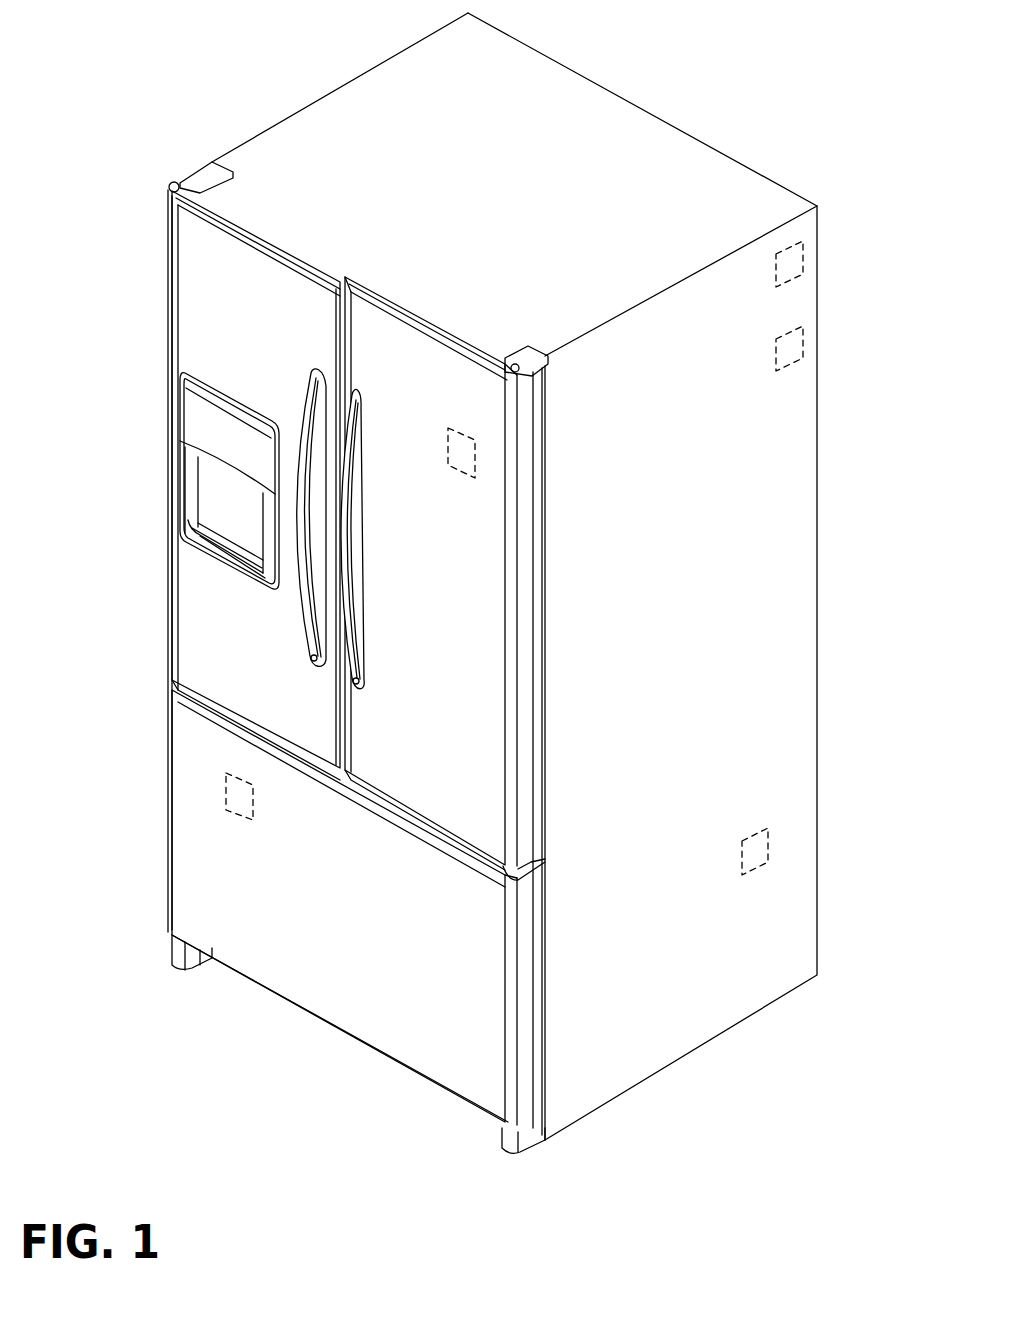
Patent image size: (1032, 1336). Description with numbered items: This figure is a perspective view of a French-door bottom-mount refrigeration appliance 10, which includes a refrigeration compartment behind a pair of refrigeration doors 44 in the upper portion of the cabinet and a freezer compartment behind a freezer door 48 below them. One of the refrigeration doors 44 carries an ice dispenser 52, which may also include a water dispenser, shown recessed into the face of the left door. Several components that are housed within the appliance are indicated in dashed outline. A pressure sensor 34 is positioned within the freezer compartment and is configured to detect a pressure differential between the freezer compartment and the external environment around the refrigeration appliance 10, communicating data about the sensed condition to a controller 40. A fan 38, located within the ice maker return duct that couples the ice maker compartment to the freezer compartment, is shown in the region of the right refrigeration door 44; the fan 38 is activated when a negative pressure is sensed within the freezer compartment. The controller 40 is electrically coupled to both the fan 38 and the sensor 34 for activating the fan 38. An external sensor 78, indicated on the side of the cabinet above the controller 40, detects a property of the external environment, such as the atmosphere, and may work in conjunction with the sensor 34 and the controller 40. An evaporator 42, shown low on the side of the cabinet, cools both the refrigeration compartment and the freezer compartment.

The refrigeration appliance 10 is at (492, 583).
The pressure sensor 34 is at (226, 797).
The fan 38 is at (462, 472).
The controller 40 is at (803, 345).
The evaporator 42 is at (768, 848).
The refrigeration doors 44 is at (228, 661).
The freezer door 48 is at (307, 919).
The ice dispenser 52 is at (222, 503).
The external sensor 78 is at (803, 262).